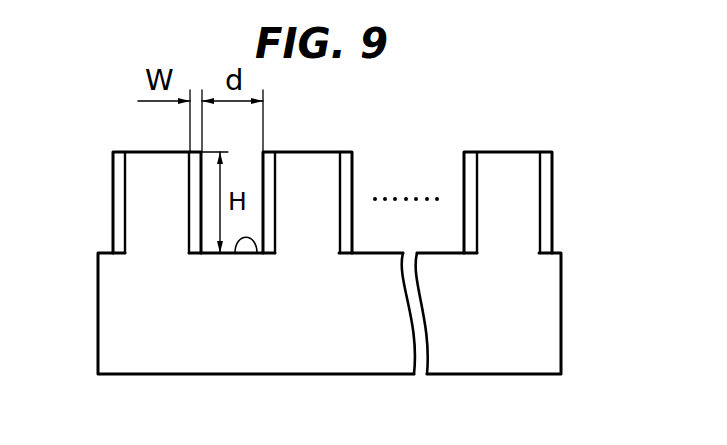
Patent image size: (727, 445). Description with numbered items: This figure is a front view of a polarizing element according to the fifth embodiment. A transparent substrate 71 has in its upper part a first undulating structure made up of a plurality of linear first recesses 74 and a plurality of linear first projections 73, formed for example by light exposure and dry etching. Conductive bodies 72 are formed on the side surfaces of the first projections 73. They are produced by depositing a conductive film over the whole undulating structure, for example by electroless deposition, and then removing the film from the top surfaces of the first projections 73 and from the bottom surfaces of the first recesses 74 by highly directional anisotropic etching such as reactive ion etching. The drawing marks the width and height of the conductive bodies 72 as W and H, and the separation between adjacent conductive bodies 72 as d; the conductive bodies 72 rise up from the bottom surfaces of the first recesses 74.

The transparent substrate 71 is at (302, 360).
The conductive body 72 is at (116, 175).
The first projection 73 is at (137, 155).
The first recess 74 is at (236, 253).